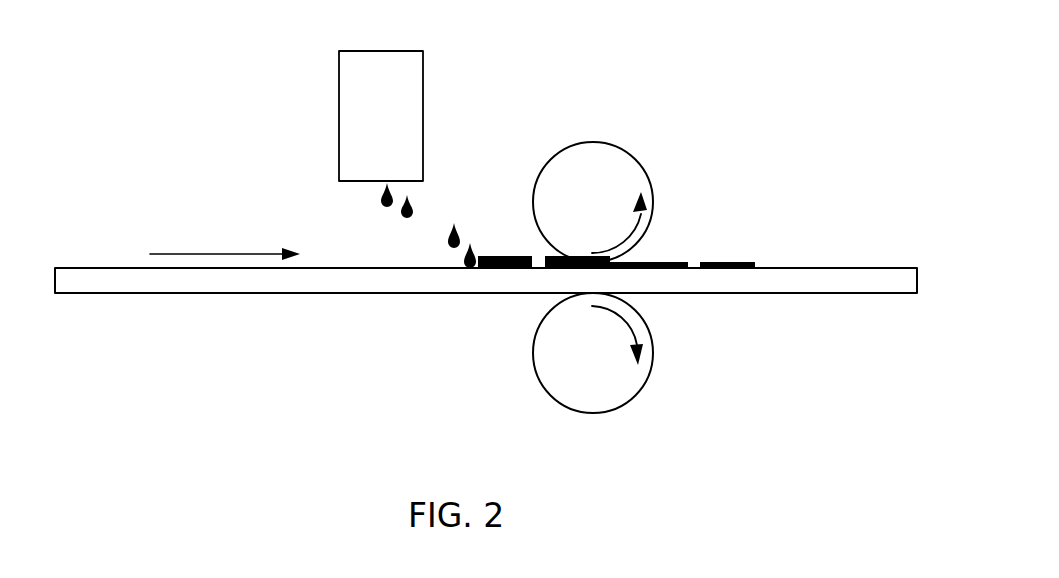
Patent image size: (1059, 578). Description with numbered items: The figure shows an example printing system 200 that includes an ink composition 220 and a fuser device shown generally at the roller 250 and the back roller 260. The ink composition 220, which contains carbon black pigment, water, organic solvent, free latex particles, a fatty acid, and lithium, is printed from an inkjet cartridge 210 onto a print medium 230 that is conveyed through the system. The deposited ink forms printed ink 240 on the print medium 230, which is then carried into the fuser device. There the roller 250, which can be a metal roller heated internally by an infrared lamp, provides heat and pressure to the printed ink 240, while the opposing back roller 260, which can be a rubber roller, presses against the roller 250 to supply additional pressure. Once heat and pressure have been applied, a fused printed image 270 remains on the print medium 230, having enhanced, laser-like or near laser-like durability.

The printing system 200 is at (135, 106).
The inkjet cartridge 210 is at (357, 110).
The ink composition 220 is at (405, 217).
The substrate 230 is at (223, 279).
The printed ink 240 is at (513, 257).
The roller 250 is at (618, 177).
The back roller 260 is at (618, 377).
The fused printed image 270 is at (678, 260).